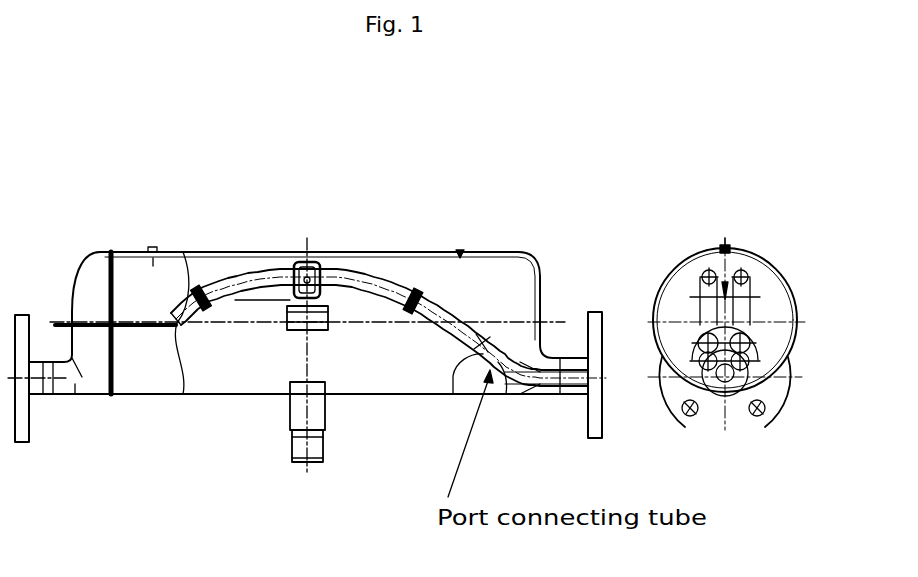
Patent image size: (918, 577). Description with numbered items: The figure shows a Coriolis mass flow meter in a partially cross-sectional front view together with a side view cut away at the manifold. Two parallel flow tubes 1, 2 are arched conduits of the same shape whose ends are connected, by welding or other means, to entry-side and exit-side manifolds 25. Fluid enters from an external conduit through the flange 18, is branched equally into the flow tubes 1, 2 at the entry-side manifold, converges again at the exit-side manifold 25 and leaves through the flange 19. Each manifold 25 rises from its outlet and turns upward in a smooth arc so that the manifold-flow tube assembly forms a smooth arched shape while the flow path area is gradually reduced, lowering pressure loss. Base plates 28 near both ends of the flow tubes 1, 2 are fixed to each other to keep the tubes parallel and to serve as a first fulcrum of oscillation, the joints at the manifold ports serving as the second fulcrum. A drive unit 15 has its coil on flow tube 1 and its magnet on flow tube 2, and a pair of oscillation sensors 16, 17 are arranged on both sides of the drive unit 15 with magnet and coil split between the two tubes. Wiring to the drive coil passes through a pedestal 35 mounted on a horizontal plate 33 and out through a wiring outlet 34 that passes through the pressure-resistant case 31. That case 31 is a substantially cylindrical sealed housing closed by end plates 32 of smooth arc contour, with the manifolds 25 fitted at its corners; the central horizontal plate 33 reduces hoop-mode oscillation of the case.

The flow tube 1 is at (347, 271).
The flow tube 2 is at (742, 270).
The drive unit 15 is at (313, 246).
The oscillation sensor 16 is at (205, 288).
The oscillation sensor 17 is at (428, 289).
The flange 18 is at (32, 444).
The flange 19 is at (588, 430).
The manifold 25 is at (540, 380).
The base plate 28 is at (453, 398).
The pressure-resistant case 31 is at (403, 253).
The end plate 32 is at (95, 268).
The horizontal plate 33 is at (290, 331).
The wiring outlet 34 is at (318, 413).
The pedestal 35 is at (287, 313).